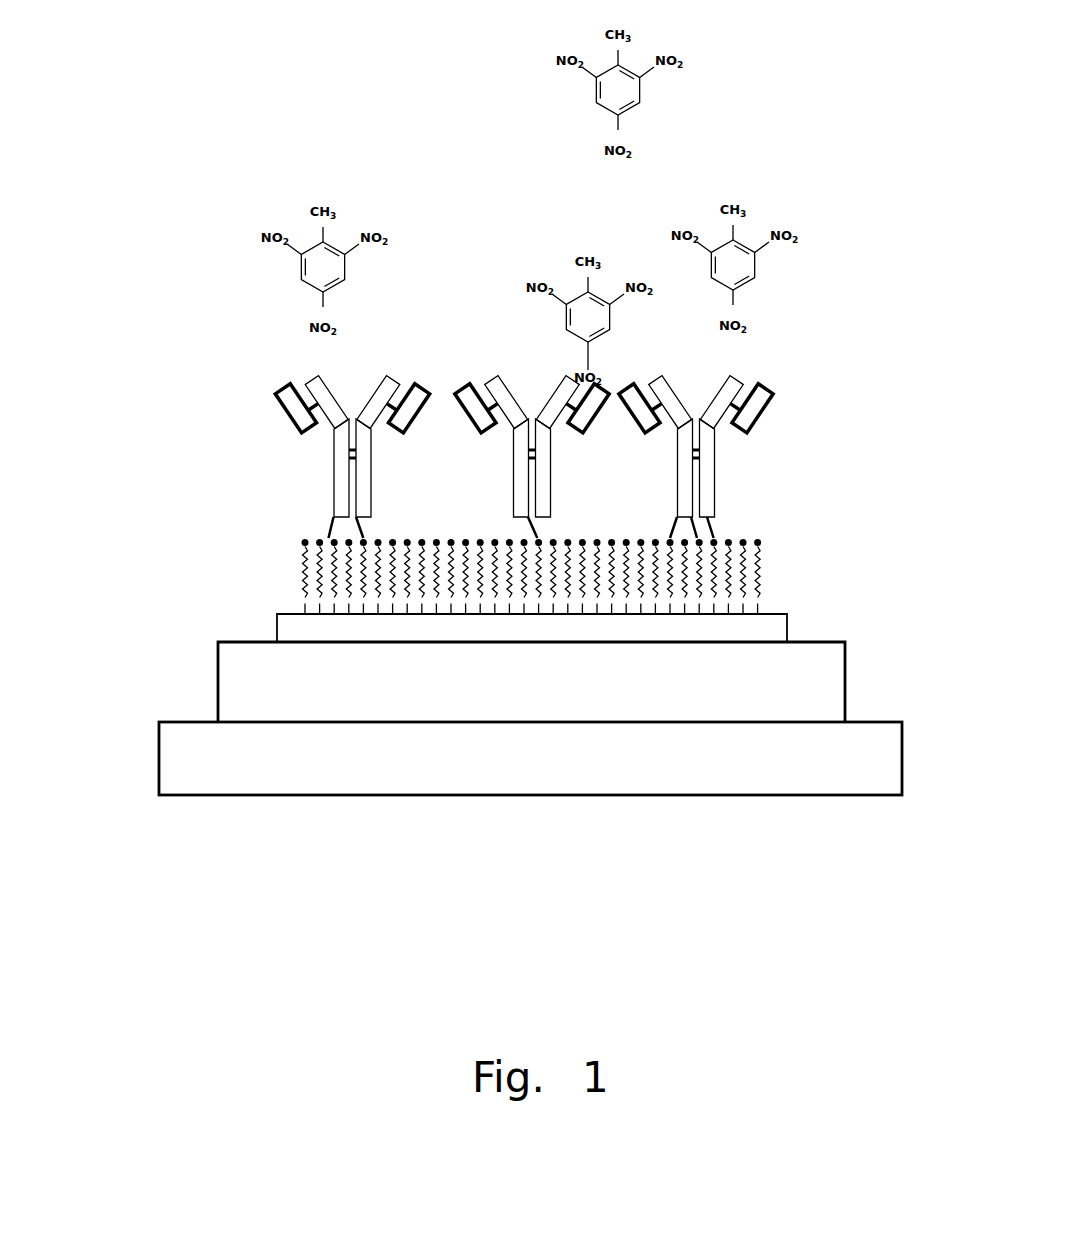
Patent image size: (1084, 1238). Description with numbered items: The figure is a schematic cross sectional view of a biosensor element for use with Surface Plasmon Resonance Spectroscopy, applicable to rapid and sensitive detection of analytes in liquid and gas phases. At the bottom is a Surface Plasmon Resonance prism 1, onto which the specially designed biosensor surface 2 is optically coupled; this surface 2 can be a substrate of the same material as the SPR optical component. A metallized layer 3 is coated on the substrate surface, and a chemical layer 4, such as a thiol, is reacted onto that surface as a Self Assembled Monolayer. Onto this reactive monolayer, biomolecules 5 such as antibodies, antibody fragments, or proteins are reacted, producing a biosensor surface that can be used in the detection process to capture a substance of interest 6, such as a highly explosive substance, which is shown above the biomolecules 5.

The Surface Plasmon Resonance prism 1 is at (195, 743).
The biosensor surface 2 is at (235, 660).
The metallized layer 3 is at (288, 625).
The chemical layer 4 is at (750, 578).
The biomolecules 5 is at (708, 502).
The substance of interest 6 is at (747, 205).